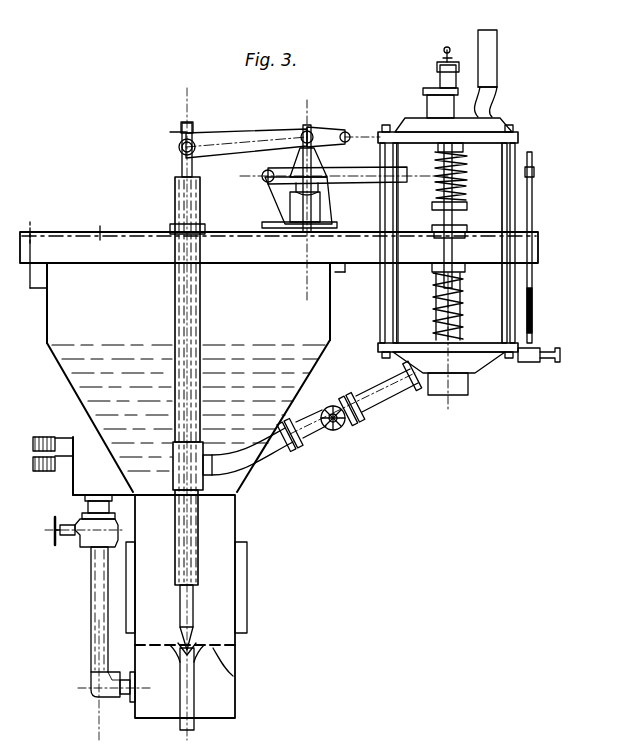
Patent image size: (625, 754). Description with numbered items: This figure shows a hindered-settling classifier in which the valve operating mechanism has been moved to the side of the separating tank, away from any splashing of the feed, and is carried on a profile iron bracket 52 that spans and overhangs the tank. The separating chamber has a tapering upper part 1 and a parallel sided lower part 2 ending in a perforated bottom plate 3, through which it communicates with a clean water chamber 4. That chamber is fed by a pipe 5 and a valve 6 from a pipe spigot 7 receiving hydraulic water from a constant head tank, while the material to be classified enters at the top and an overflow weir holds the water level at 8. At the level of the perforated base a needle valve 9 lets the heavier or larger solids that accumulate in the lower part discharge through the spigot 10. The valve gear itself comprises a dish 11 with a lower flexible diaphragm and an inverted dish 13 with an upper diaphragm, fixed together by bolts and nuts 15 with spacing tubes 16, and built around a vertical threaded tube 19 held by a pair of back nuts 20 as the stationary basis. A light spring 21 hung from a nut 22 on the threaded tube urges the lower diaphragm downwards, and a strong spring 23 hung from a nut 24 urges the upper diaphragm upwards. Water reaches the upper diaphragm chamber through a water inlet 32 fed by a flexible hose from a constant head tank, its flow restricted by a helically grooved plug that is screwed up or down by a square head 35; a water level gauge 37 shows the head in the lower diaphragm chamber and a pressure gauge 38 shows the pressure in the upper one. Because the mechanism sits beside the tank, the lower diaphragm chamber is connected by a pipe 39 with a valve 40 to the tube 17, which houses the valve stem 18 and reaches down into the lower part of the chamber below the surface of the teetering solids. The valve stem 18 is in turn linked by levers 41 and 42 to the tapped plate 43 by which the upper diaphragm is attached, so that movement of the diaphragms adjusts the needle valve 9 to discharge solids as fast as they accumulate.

The tapering upper part 1 is at (60, 368).
The parallel sided lower part 2 is at (220, 533).
The perforated bottom plate 3 is at (233, 676).
The clean water chamber 4 is at (228, 706).
The pipe 5 is at (92, 629).
The valve 6 is at (85, 548).
The pipe spigot 7 is at (62, 470).
The water level 8 is at (135, 343).
The needle valve 9 is at (200, 643).
The spigot 10 is at (194, 723).
The dish 11 is at (478, 372).
The inverted dish 13 is at (487, 120).
The bolts and nuts 15 is at (384, 128).
The spacing tubes 16 is at (516, 160).
The tube 17 is at (176, 216).
The valve stem 18 is at (193, 157).
The vertical threaded tube 19 is at (440, 218).
The back nuts 20 is at (432, 265).
The light spring 21 is at (437, 303).
The nut 22 is at (456, 272).
The strong spring 23 is at (463, 194).
The nut 24 is at (465, 210).
The water inlet 32 is at (427, 93).
The square head 35 is at (449, 50).
The water level gauge 37 is at (533, 218).
The pressure gauge 38 is at (497, 72).
The pipe 39 is at (383, 395).
The valve 40 is at (336, 432).
The lever 41 is at (249, 140).
The lever 42 is at (367, 184).
The tapped plate 43 is at (463, 166).
The profile iron bracket 52 is at (100, 232).